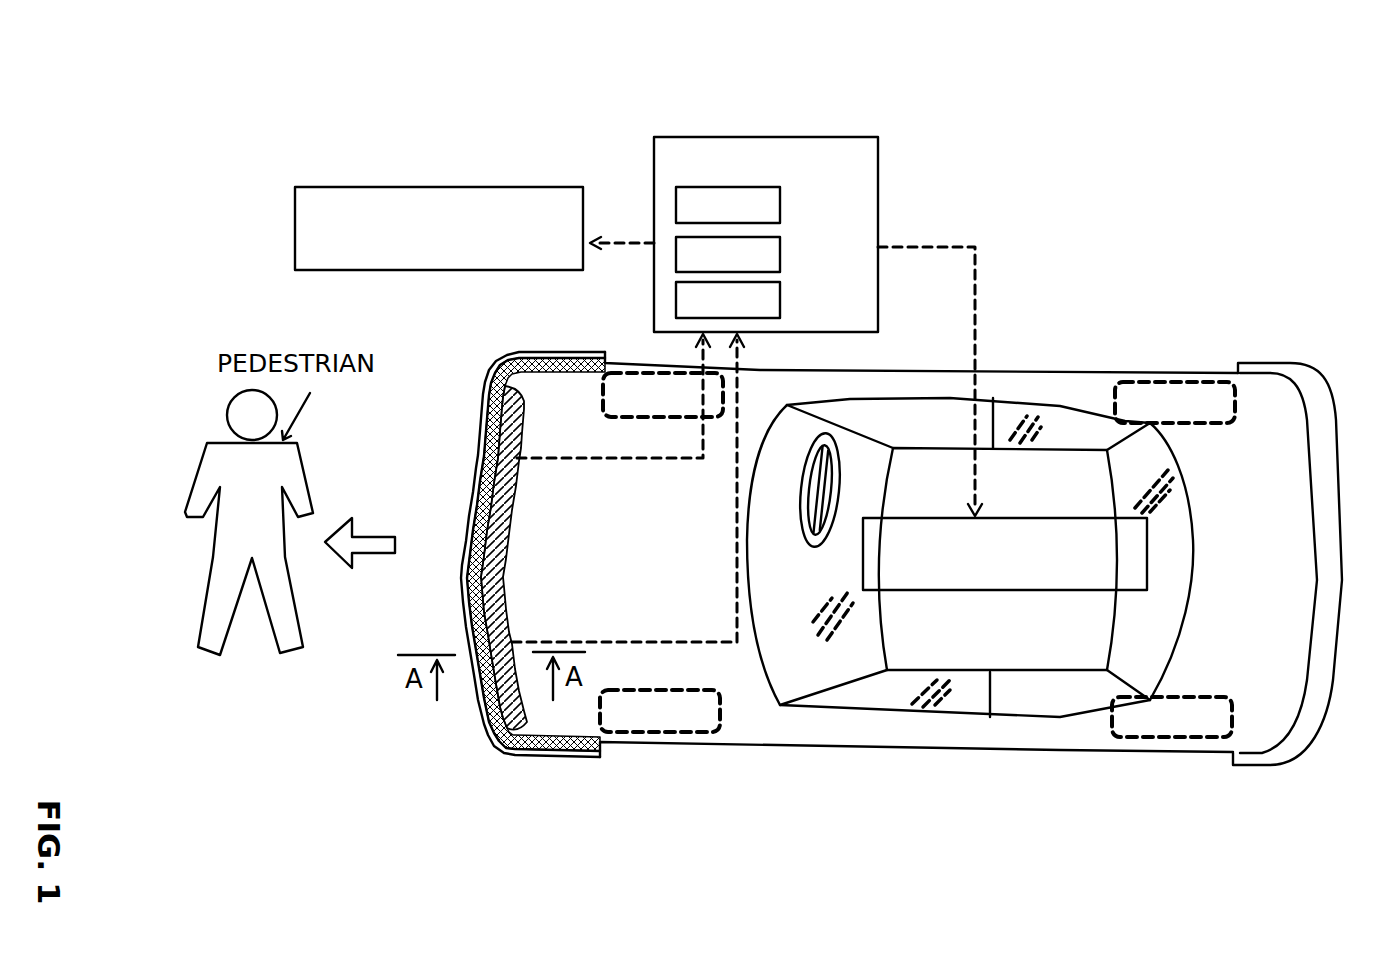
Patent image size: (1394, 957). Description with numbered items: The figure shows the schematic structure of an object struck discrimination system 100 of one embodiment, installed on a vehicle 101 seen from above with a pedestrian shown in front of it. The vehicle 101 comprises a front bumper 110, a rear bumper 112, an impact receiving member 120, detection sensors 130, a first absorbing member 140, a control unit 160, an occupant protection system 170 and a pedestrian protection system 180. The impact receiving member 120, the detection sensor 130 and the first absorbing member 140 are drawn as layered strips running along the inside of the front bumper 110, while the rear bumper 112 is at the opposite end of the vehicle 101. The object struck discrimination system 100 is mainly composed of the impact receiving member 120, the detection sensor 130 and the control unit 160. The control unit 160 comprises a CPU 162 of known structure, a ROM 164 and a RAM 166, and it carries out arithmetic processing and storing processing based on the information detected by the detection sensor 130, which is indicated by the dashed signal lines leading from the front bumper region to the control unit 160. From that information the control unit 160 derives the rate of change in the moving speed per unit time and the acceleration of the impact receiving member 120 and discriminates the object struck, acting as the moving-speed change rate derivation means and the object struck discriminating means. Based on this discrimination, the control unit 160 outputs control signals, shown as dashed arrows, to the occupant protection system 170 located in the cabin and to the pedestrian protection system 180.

The object struck discrimination system 100 is at (1015, 110).
The vehicle 101 is at (1054, 368).
The front bumper 110 is at (514, 771).
The rear bumper 112 is at (1330, 718).
The impact receiving member 120 is at (494, 730).
The detection sensor 130 is at (463, 592).
The first absorbing member 140 is at (507, 397).
The control unit 160 is at (788, 126).
The CPU 162 is at (780, 205).
The ROM 164 is at (780, 252).
The RAM 166 is at (780, 298).
The occupant protection system 170 is at (1035, 605).
The pedestrian protection system 180 is at (440, 185).